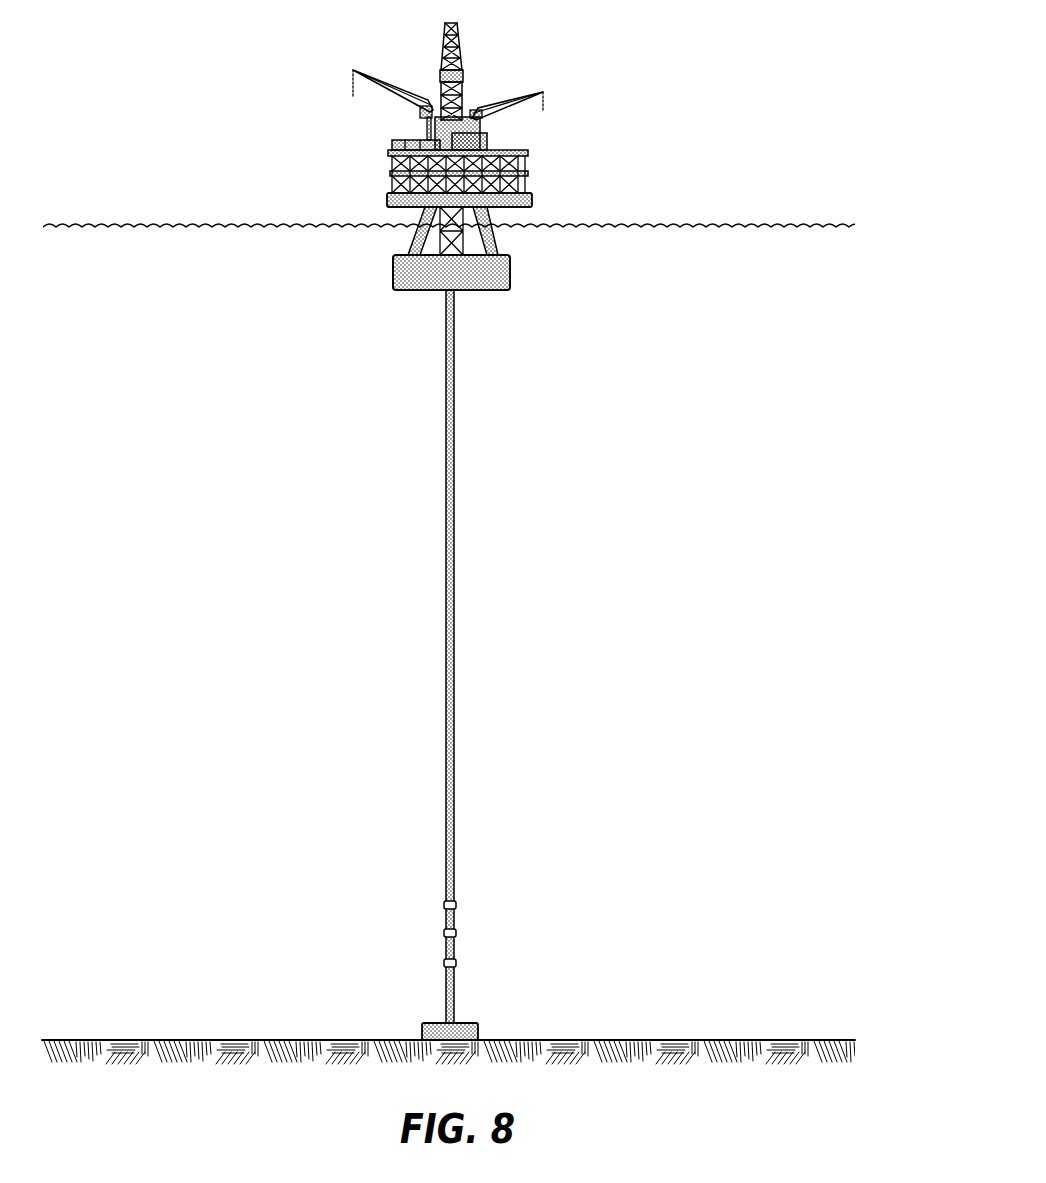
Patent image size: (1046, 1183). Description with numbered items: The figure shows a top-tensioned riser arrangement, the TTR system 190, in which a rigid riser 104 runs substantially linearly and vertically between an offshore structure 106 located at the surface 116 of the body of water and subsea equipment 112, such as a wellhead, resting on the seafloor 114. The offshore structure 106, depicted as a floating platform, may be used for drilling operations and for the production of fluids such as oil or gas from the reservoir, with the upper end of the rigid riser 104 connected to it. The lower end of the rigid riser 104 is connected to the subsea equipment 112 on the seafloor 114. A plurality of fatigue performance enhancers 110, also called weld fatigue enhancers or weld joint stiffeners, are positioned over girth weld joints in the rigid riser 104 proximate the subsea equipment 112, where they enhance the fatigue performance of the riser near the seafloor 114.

The TTR system 190 is at (512, 648).
The offshore structure 106 is at (358, 152).
The surface 116 is at (674, 227).
The rigid riser 104 is at (446, 683).
The fatigue performance enhancers 110 is at (456, 905).
The subsea equipment 112 is at (466, 1023).
The seafloor 114 is at (676, 1040).